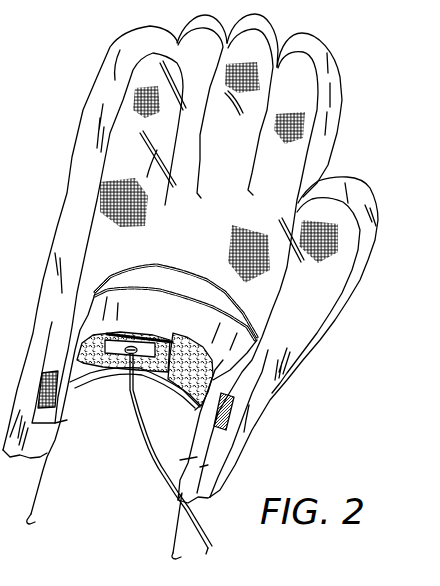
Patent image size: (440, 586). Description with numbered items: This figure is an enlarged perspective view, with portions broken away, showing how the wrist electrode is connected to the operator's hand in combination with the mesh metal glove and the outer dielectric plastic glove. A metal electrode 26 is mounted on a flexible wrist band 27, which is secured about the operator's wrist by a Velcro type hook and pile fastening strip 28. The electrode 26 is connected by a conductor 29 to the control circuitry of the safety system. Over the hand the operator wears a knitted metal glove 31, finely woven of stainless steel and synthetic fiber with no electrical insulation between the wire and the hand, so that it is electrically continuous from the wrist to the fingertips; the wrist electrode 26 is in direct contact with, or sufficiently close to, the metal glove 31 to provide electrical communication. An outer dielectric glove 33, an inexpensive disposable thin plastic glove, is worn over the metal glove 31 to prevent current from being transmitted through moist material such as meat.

The metal electrode 26 is at (117, 349).
The flexible wrist band 27 is at (80, 354).
The hook and pile fastening strip 28 is at (195, 379).
The conductor 29 is at (153, 477).
The knitted metal glove 31 is at (165, 283).
The outer dielectric glove 33 is at (97, 104).